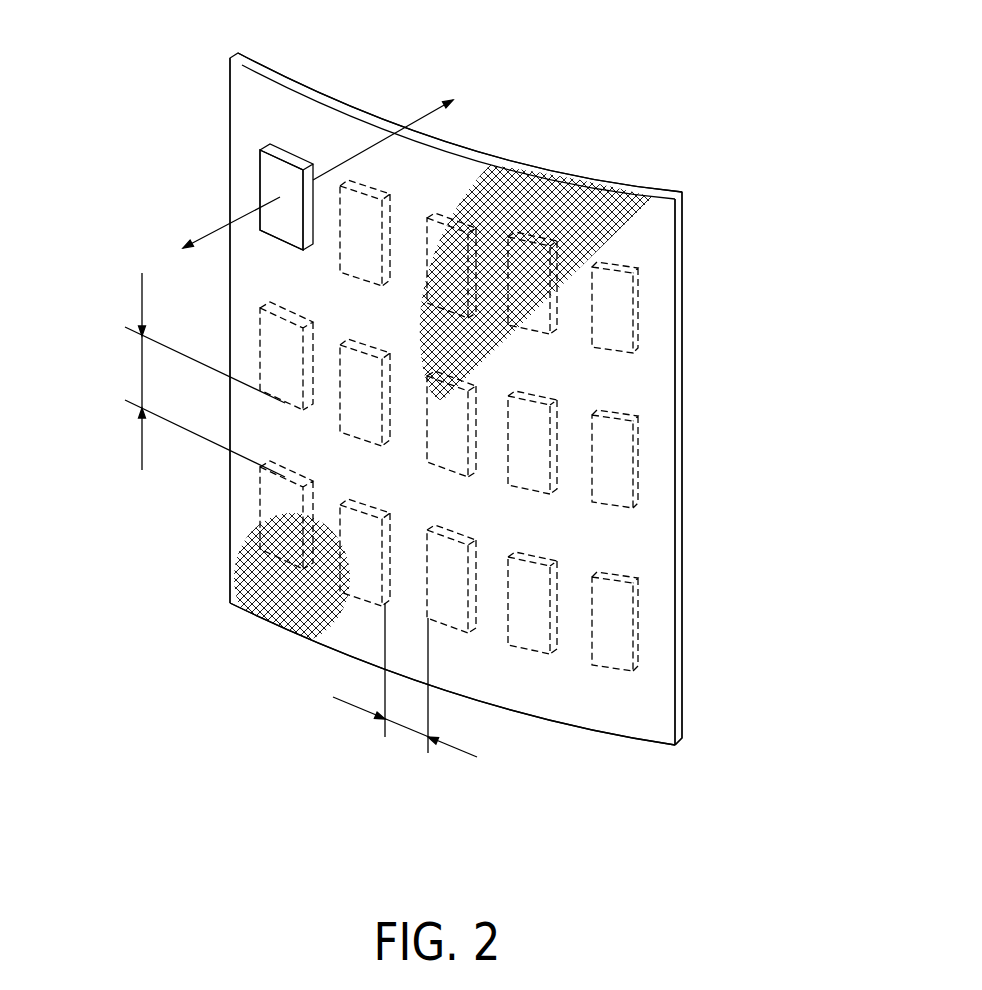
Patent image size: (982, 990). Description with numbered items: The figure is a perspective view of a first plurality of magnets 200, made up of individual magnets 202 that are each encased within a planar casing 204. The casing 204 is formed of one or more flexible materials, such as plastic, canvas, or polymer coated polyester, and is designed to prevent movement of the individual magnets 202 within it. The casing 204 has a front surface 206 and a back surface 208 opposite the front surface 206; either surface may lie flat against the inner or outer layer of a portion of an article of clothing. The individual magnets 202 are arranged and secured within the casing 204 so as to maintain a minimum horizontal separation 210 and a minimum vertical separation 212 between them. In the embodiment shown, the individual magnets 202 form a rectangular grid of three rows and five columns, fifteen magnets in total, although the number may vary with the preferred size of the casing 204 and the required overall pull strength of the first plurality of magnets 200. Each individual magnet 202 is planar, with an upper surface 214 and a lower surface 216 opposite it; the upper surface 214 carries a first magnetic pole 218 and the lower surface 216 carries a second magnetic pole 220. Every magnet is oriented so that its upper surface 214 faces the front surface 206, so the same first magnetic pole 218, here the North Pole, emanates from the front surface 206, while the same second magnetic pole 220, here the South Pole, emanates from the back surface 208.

The first plurality of magnets 200 is at (695, 97).
The individual magnets 202 is at (262, 508).
The casing 204 is at (657, 634).
The front surface 206 is at (630, 397).
The back surface 208 is at (682, 563).
The minimum horizontal separation 210 is at (405, 694).
The minimum vertical separation 212 is at (183, 375).
The upper surface 214 is at (275, 172).
The lower surface 216 is at (293, 150).
The first magnetic pole 218 is at (208, 232).
The second magnetic pole 220 is at (422, 127).